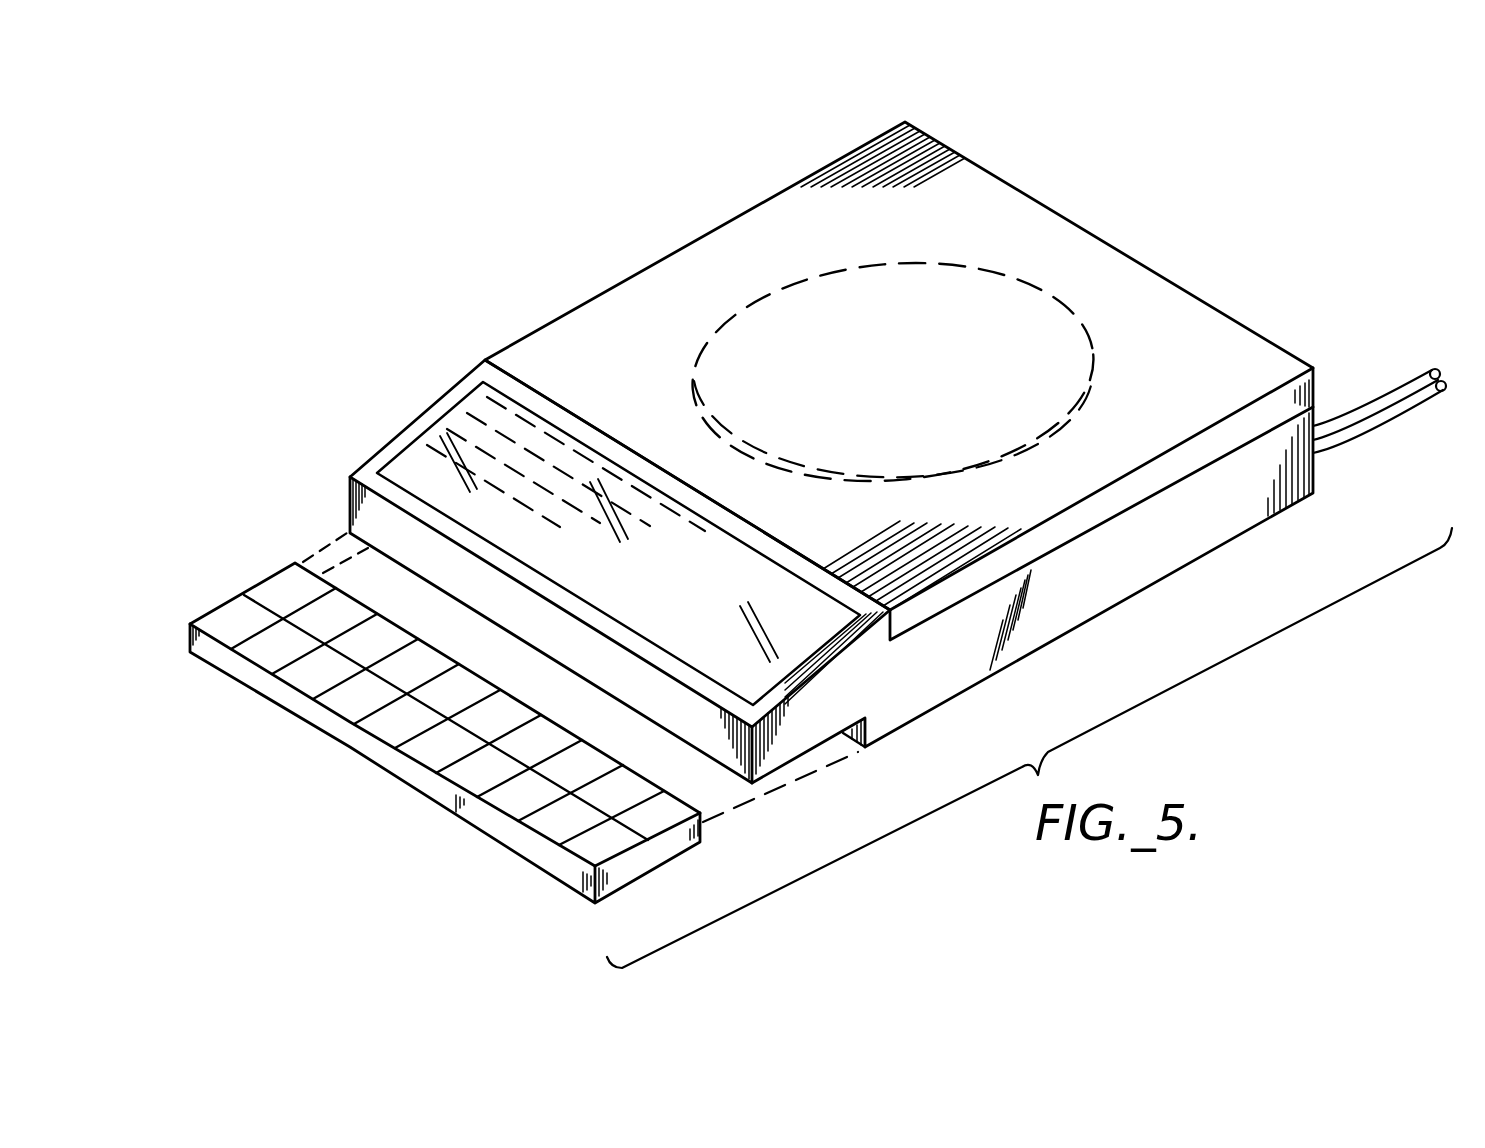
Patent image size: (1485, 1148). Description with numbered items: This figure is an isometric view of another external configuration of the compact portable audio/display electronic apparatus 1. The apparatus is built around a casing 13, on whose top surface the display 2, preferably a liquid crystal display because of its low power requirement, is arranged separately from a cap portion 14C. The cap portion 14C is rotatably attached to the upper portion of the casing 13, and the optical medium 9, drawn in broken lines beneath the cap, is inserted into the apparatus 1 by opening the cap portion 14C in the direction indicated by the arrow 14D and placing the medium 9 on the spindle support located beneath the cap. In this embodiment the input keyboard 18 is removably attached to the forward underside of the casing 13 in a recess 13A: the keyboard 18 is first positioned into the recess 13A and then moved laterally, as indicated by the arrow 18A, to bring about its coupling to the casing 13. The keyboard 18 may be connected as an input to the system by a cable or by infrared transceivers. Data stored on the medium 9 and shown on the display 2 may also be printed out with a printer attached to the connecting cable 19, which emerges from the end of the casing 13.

The compact portable audio/display electronic apparatus 1 is at (567, 212).
The display 2 is at (420, 460).
The optical medium 9 is at (921, 262).
The casing 13 is at (1133, 565).
The recess 13A is at (823, 748).
The cap portion 14C is at (1153, 478).
The arrow 14D is at (1262, 268).
The input keyboard 18 is at (530, 868).
The arrow 18A is at (583, 800).
The connecting cable 19 is at (1387, 413).